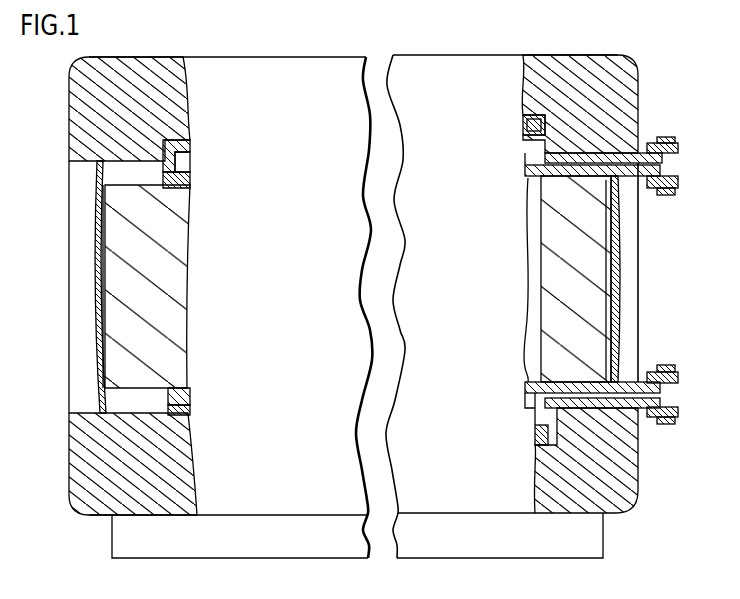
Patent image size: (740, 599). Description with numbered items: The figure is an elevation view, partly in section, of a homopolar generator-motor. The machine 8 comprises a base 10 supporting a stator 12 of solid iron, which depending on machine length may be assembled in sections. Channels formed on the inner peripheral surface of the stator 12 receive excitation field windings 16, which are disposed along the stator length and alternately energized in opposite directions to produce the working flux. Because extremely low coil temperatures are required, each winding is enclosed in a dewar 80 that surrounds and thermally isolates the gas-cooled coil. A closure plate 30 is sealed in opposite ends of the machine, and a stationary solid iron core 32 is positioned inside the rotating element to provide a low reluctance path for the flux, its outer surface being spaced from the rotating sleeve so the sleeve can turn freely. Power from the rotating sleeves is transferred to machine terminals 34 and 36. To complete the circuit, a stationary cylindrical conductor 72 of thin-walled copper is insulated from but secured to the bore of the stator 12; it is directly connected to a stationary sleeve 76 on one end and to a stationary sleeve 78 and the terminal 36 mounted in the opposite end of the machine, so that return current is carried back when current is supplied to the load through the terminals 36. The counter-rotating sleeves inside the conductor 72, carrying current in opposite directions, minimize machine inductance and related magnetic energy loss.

The machine 8 is at (343, 48).
The base 10 is at (342, 541).
The stator 12 is at (580, 62).
The excitation field windings 16 is at (523, 125).
The closure plate 30 is at (96, 250).
The stationary solid iron core 32 is at (103, 319).
The machine terminal 34 is at (680, 148).
The machine terminal 36 is at (680, 183).
The stationary cylindrical conductor 72 is at (192, 149).
The stationary sleeve 76 is at (192, 182).
The stationary sleeve 78 is at (588, 177).
The dewar 80 is at (536, 118).